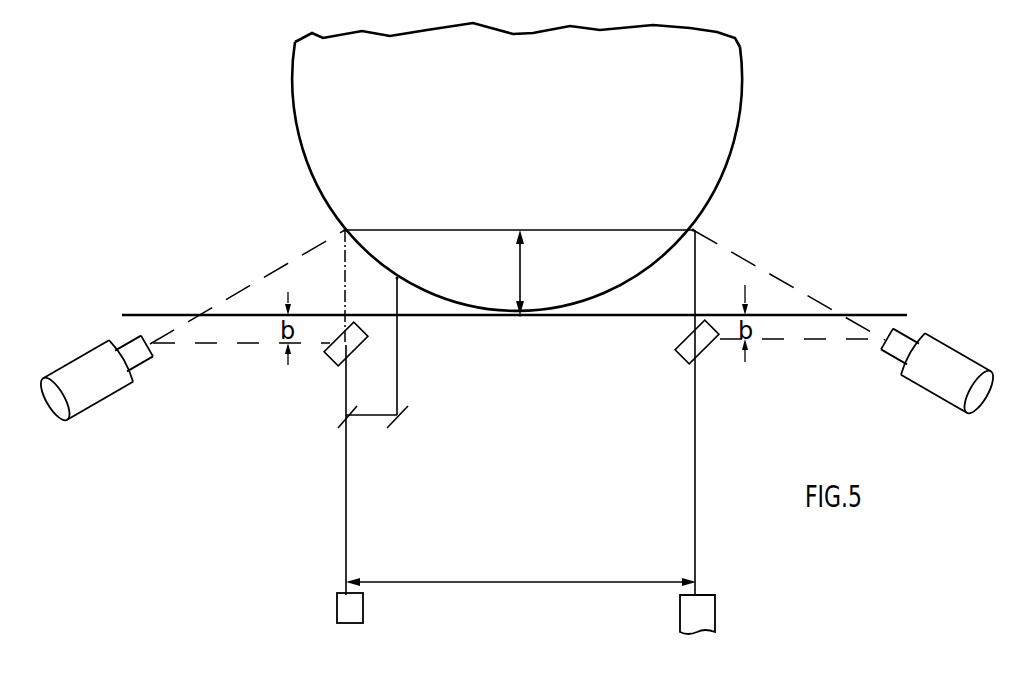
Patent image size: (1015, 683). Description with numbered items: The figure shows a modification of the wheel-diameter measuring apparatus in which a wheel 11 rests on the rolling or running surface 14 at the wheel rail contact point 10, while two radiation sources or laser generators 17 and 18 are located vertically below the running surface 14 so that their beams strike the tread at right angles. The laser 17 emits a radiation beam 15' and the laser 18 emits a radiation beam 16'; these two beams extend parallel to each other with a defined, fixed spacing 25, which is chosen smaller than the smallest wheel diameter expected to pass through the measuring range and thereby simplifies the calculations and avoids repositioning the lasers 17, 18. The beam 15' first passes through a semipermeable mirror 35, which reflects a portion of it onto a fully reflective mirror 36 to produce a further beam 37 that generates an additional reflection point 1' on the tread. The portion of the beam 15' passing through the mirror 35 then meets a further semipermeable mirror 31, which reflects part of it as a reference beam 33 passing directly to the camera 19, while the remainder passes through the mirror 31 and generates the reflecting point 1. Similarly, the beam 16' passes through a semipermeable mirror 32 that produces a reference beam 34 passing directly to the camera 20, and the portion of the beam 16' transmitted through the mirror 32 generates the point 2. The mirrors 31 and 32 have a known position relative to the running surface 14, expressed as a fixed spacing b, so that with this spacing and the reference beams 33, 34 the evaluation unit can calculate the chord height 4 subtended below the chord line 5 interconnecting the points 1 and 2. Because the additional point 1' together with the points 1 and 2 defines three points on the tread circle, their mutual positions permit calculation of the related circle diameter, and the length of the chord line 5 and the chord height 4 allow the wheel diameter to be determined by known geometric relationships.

The wheel 11 is at (728, 99).
The chord line 5 is at (561, 230).
The reflecting point 1 is at (356, 213).
The reflecting point 2 is at (681, 213).
The additional reflection point 1' is at (411, 263).
The chord height 4 is at (521, 268).
The wheel rail contact point 10 is at (520, 318).
The rolling surface 14 is at (868, 295).
The camera 19 is at (102, 357).
The camera 20 is at (943, 354).
The reference beam 33 is at (247, 348).
The reference beam 34 is at (827, 340).
The semipermeable mirror 31 is at (332, 355).
The semipermeable mirror 32 is at (672, 338).
The radiation beam 15' is at (326, 412).
The radiation beam 16' is at (715, 412).
The further beam 37 is at (398, 325).
The semipermeable mirror 35 is at (338, 425).
The fully reflective mirror 36 is at (406, 417).
The radiation source 17 is at (363, 603).
The radiation source 18 is at (723, 607).
The spacing 25 is at (610, 583).